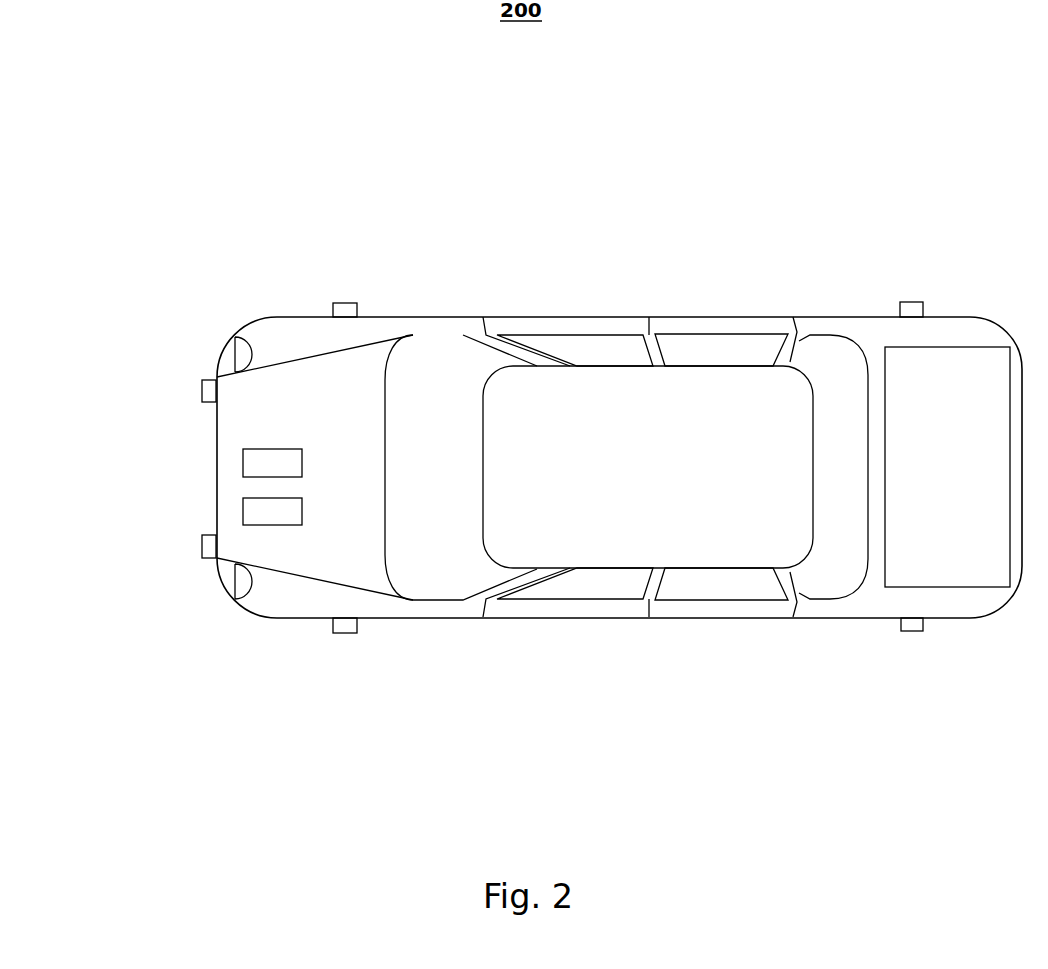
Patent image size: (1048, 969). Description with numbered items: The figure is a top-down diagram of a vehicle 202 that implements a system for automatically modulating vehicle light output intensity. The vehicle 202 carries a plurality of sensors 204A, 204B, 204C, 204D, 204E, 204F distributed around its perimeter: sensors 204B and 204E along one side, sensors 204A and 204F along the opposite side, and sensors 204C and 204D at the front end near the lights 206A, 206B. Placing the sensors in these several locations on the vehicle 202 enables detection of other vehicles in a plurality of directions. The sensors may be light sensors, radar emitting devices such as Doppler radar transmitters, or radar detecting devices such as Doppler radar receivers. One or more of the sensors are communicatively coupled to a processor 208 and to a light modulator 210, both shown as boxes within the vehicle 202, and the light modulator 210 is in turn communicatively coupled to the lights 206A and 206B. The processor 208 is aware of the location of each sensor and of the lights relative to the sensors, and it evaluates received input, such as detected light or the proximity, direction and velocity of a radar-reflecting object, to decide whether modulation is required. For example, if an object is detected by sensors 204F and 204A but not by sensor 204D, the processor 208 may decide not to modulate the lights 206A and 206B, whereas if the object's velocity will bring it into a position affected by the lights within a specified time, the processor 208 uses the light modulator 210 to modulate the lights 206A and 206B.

The vehicle 202 is at (632, 618).
The sensor 204A is at (357, 633).
The sensor 204B is at (333, 303).
The sensor 204C is at (201, 397).
The sensor 204D is at (201, 544).
The sensor 204E is at (900, 302).
The sensor 204F is at (922, 631).
The light 206A is at (224, 353).
The light 206B is at (224, 582).
The processor 208 is at (272, 463).
The light modulator 210 is at (272, 511).